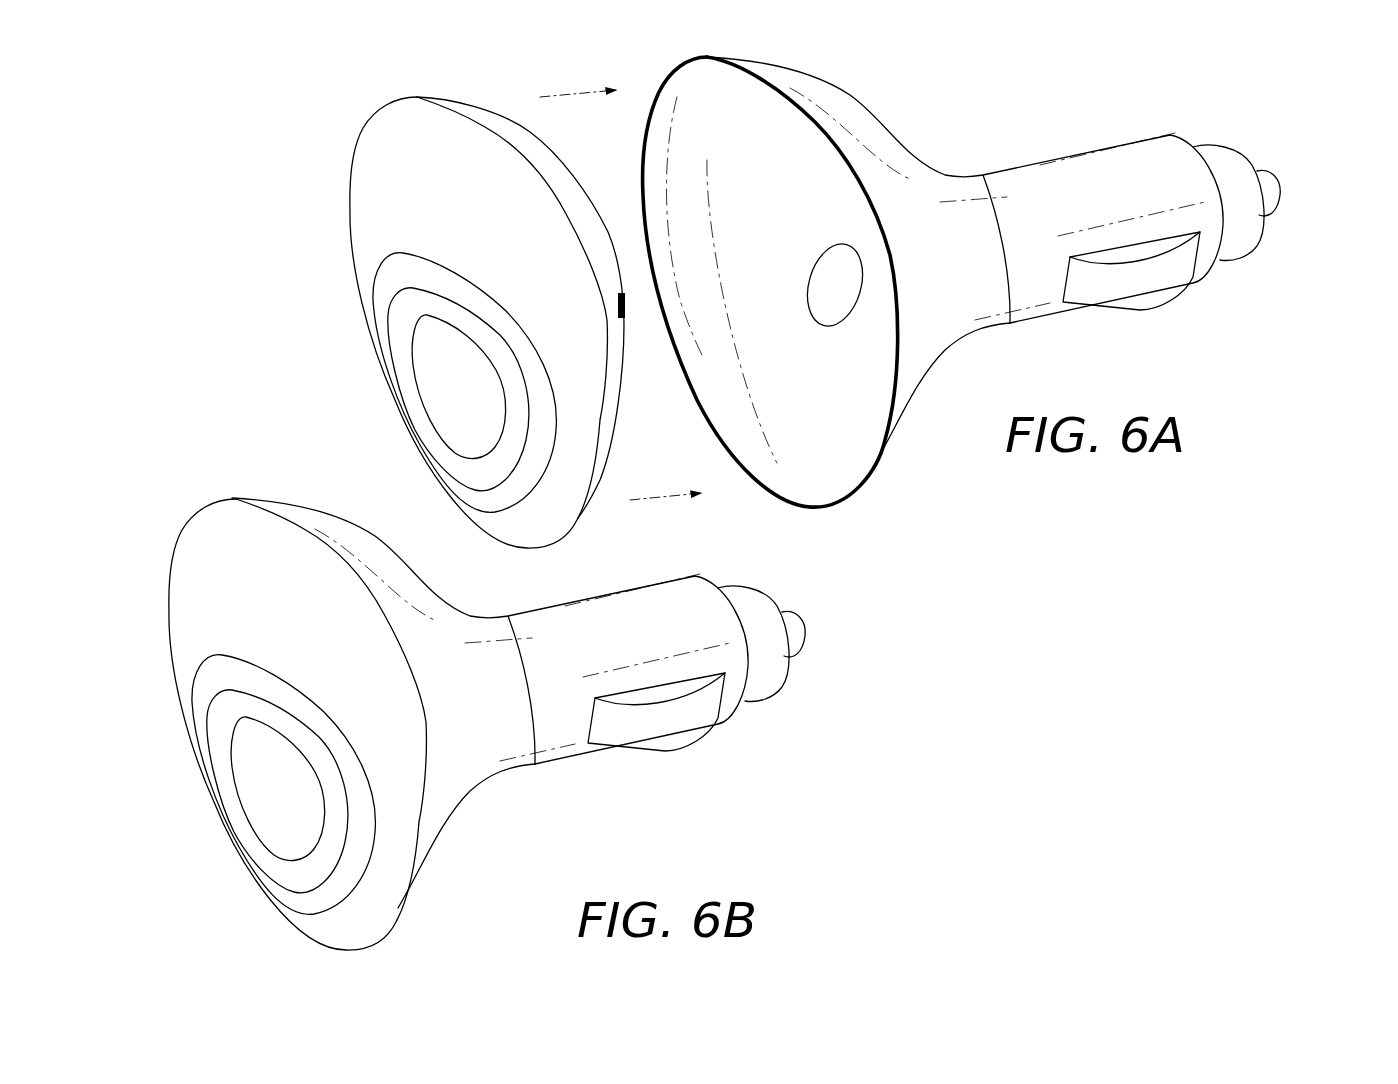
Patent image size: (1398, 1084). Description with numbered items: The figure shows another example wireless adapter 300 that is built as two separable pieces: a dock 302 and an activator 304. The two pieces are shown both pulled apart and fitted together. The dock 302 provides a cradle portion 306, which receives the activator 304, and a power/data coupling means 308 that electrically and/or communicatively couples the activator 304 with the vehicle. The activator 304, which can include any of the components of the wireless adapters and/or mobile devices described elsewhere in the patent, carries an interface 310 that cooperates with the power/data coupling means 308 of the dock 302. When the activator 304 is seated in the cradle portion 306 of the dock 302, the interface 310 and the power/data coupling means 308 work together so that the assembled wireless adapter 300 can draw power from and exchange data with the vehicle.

In FIG. 6A, the wireless adapter 300 is at (1263, 80).
In FIG. 6B, the wireless adapter 300 is at (830, 785).
In FIG. 6A, the dock 302 is at (1260, 143).
In FIG. 6B, the dock 302 is at (793, 710).
In FIG. 6A, the activator 304 is at (478, 82).
In FIG. 6B, the activator 304 is at (153, 553).
In FIG. 6A, the cradle portion 306 is at (827, 433).
In FIG. 6A, the power/data coupling means 308 is at (623, 313).
In FIG. 6A, the interface 310 is at (822, 246).